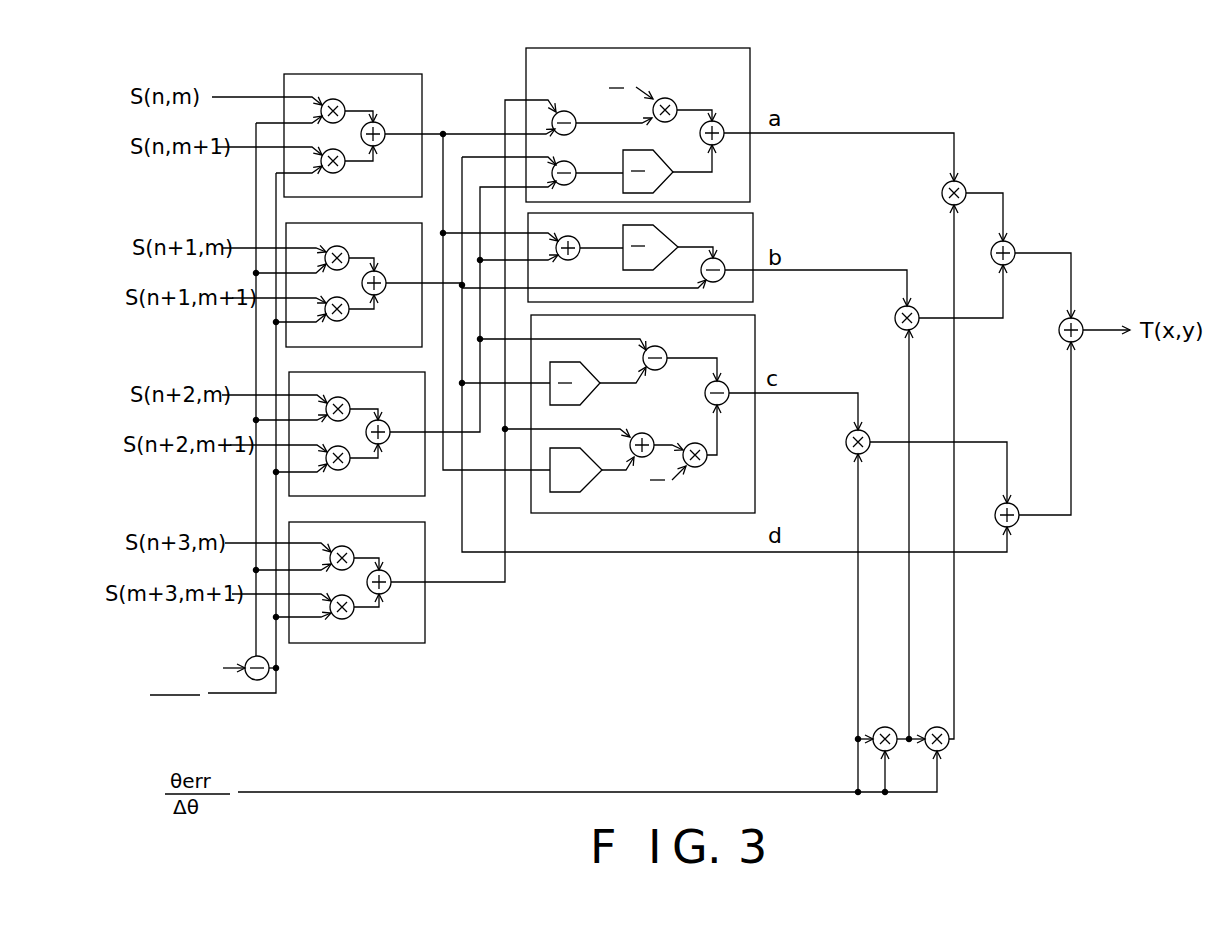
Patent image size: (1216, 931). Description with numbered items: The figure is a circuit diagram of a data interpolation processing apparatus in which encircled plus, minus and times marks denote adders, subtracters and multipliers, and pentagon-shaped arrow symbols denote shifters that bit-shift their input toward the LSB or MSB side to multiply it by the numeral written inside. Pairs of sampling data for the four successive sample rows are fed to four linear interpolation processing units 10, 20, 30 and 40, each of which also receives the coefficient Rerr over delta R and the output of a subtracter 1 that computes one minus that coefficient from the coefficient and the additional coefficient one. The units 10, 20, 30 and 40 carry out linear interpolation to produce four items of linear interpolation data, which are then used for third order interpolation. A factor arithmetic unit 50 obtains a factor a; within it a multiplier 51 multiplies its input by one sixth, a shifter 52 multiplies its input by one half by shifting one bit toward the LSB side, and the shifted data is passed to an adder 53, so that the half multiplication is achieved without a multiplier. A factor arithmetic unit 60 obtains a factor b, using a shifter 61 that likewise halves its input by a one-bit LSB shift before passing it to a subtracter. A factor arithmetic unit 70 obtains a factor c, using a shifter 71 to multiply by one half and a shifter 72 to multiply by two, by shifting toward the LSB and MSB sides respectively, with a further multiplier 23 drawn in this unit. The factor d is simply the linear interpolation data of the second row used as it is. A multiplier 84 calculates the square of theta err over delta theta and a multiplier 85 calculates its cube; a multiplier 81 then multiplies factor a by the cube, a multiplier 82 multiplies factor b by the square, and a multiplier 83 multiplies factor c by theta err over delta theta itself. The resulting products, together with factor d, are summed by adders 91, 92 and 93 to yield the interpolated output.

The subtracter 1 is at (259, 680).
The linear interpolation processing unit 10 is at (428, 50).
The linear interpolation processing unit 20 is at (422, 347).
The linear interpolation processing unit 30 is at (425, 480).
The linear interpolation processing unit 40 is at (425, 630).
The factor arithmetic unit 50 is at (666, 123).
The multiplier 51 is at (672, 100).
The shifter 52 is at (645, 150).
The adder 53 is at (722, 143).
The factor arithmetic unit 60 is at (669, 257).
The shifter 61 is at (668, 232).
The factor arithmetic unit 70 is at (671, 414).
The shifter 71 is at (592, 395).
The shifter 72 is at (592, 482).
The multiplier 23 is at (704, 465).
The multiplier 81 is at (961, 184).
The multiplier 82 is at (914, 309).
The multiplier 83 is at (866, 433).
The multiplier 84 is at (887, 727).
The multiplier 85 is at (939, 727).
The adder 91 is at (1011, 245).
The adder 92 is at (1015, 507).
The adder 93 is at (1079, 322).